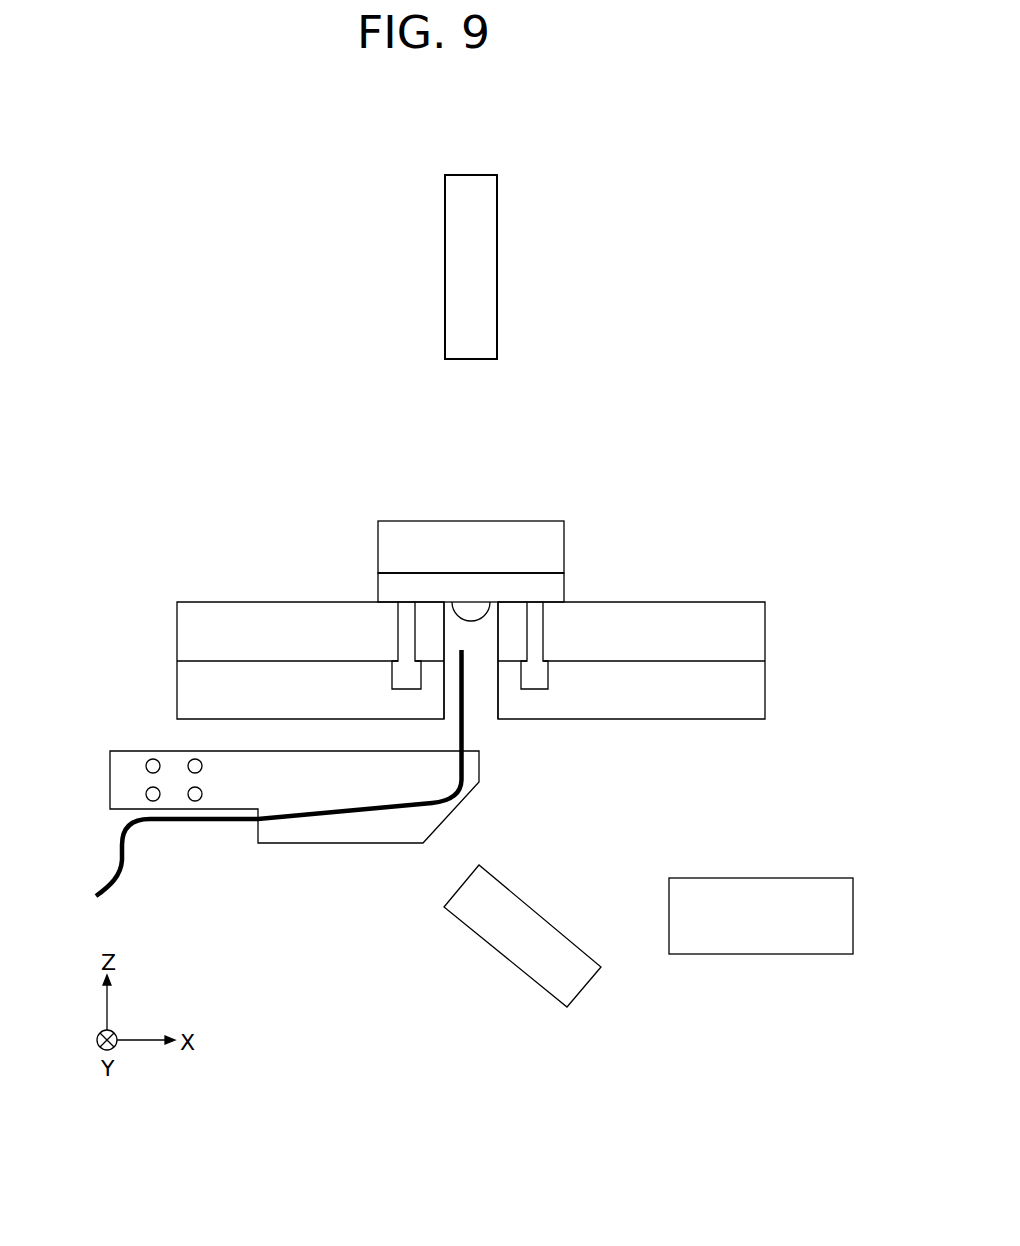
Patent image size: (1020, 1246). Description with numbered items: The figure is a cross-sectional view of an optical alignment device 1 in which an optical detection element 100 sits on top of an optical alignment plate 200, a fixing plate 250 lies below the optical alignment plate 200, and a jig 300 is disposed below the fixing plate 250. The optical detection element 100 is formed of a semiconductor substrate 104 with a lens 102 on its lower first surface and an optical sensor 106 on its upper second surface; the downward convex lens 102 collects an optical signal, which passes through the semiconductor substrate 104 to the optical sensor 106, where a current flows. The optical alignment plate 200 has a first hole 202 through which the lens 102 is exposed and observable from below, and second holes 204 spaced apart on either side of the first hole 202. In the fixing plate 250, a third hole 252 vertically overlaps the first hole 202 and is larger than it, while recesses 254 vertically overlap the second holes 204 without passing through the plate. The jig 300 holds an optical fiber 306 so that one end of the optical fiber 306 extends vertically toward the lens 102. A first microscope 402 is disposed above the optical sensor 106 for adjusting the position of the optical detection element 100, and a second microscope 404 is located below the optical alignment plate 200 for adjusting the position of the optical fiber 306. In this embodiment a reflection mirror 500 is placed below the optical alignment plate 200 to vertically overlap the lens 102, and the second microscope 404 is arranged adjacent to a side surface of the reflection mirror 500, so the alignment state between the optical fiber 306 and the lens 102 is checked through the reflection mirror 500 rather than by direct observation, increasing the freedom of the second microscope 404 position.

The optical alignment device 1 is at (689, 144).
The optical detection element 100 is at (469, 571).
The lens 102 is at (470, 607).
The semiconductor substrate 104 is at (555, 587).
The optical sensor 106 is at (555, 541).
The optical alignment plate 200 is at (170, 628).
The first hole 202 is at (497, 642).
The second hole 204 is at (542, 640).
The fixing plate 250 is at (170, 688).
The third hole 252 is at (444, 698).
The recess 254 is at (395, 670).
The jig 300 is at (103, 778).
The optical fiber 306 is at (187, 820).
The first microscope 402 is at (485, 266).
The second microscope 404 is at (761, 943).
The reflection mirror 500 is at (554, 986).